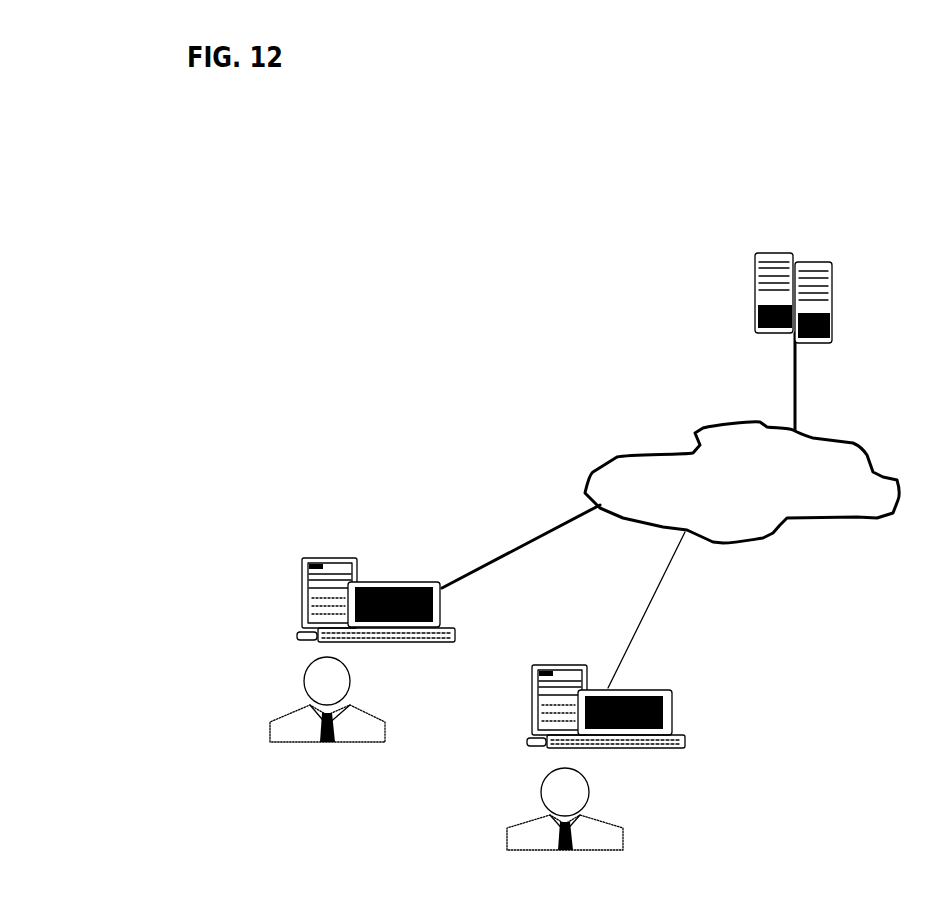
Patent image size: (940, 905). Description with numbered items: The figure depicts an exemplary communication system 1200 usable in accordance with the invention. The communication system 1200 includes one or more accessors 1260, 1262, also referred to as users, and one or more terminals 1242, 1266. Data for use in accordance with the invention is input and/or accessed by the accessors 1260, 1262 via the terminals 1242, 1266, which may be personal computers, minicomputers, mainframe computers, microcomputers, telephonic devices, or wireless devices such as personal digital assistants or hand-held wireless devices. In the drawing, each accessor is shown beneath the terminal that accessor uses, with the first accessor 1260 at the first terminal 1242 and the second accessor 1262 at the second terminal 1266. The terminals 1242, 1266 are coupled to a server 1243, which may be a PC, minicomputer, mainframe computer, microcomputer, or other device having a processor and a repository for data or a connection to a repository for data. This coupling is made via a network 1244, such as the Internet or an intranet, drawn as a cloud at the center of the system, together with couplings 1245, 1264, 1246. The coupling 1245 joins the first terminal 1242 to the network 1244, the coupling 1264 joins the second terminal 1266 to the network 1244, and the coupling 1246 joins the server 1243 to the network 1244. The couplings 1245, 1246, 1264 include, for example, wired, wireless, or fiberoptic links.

The communication system 1200 is at (402, 282).
The terminal 1242 is at (307, 558).
The server 1243 is at (827, 263).
The network 1244 is at (698, 443).
The coupling 1245 is at (518, 542).
The coupling 1246 is at (793, 377).
The accessor 1260 is at (290, 708).
The accessor 1262 is at (623, 830).
The coupling 1264 is at (652, 600).
The terminal 1266 is at (668, 713).